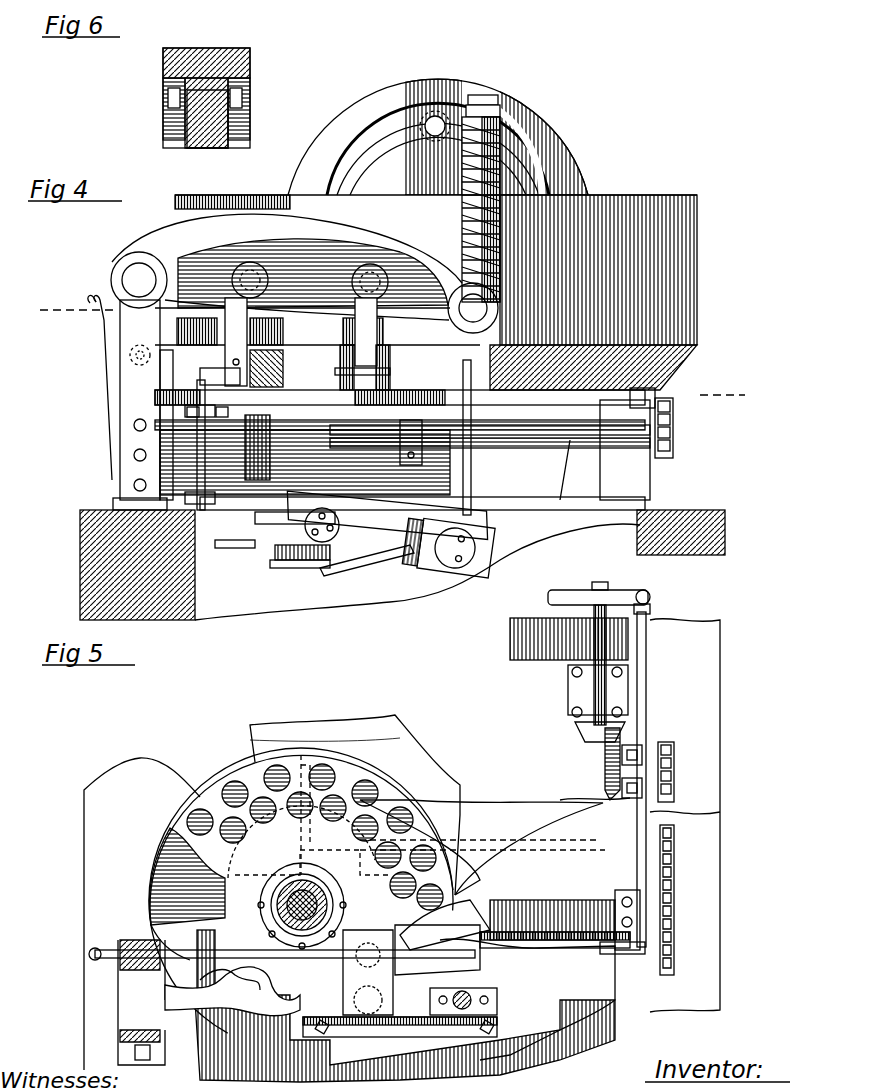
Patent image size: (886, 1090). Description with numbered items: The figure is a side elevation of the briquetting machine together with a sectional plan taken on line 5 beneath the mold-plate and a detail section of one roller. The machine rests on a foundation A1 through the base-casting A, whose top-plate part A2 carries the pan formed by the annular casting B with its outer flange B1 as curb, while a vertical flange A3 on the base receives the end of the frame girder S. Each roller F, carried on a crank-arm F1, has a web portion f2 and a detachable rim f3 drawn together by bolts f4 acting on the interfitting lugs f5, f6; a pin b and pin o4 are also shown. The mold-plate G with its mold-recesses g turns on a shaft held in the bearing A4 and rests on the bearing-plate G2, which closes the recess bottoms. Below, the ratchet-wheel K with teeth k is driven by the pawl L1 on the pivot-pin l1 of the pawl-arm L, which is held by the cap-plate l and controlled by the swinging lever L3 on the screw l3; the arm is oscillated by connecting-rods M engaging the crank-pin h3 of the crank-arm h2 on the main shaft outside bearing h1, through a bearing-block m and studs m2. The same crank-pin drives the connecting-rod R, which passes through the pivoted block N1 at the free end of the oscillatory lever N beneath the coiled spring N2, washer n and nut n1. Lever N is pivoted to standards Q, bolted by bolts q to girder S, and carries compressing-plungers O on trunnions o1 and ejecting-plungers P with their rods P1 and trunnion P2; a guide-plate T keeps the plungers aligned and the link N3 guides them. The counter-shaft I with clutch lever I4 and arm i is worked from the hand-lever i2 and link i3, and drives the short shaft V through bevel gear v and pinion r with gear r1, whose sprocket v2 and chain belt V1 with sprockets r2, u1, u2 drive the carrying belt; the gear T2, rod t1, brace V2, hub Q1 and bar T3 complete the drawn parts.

In FIG. 6, the roller F is at (217, 86).
In FIG. 4, the roller F is at (518, 118).
In FIG. 6, the web portion f2 is at (207, 119).
In FIG. 4, the web portion f2 is at (510, 192).
In FIG. 6, the detachable rim f3 is at (195, 55).
In FIG. 4, the detachable rim f3 is at (512, 185).
In FIG. 6, the bolts f4 is at (190, 112).
In FIG. 4, the bolts f4 is at (445, 118).
In FIG. 6, the outwardly projecting lugs f5 is at (206, 103).
In FIG. 4, the inwardly projecting lugs f6 is at (410, 105).
In FIG. 4, the pin b is at (435, 102).
In FIG. 4, the plate or washer n is at (495, 120).
In FIG. 4, the nut n1 is at (484, 95).
In FIG. 4, the oscillatory lever N is at (304, 273).
In FIG. 4, the pivoted block N1 is at (452, 325).
In FIG. 4, the coiled spring N2 is at (460, 210).
In FIG. 4, the radius bar or link N3 is at (165, 352).
In FIG. 4, the annular casting B is at (630, 196).
In FIG. 4, the outer flange B1 is at (680, 368).
In FIG. 4, the rigid arm i is at (660, 398).
In FIG. 4, the hand-lever i2 is at (105, 370).
In FIG. 4, the link i3 is at (345, 565).
In FIG. 4, the section line 5 is at (385, 354).
In FIG. 4, the transverse bolts q is at (133, 426).
In FIG. 5, the transverse bolts q is at (135, 1050).
In FIG. 4, the roller o4 is at (254, 272).
In FIG. 4, the pivot-pins or trunnions o1 is at (248, 315).
In FIG. 4, the compressing-plungers O is at (262, 378).
In FIG. 4, the ejecting-plungers P is at (417, 355).
In FIG. 4, the rods P1 is at (362, 281).
In FIG. 4, the post P2 is at (363, 340).
In FIG. 4, the guide-plate T is at (340, 372).
In FIG. 4, the mold-plate G is at (395, 380).
In FIG. 5, the mold-plate G is at (424, 820).
In FIG. 4, the bearing-plate G2 is at (462, 390).
In FIG. 5, the bearing-plate G2 is at (160, 864).
In FIG. 4, the crank-arms F1 is at (478, 385).
In FIG. 4, the pawl L1 is at (215, 480).
In FIG. 4, the ratchet-teeth k is at (257, 450).
In FIG. 4, the bearing A4 is at (402, 541).
In FIG. 5, the bearing A4 is at (226, 962).
In FIG. 4, the frame bar or girder S is at (488, 453).
In FIG. 4, the pivot-pin l1 is at (393, 449).
In FIG. 4, the top-plate part A2 is at (515, 410).
In FIG. 5, the top-plate part A2 is at (482, 847).
In FIG. 4, the vertical flange A3 is at (440, 460).
In FIG. 5, the vertical flange A3 is at (462, 925).
In FIG. 4, the base-casting or bed A is at (537, 471).
In FIG. 5, the base-casting or bed A is at (570, 895).
In FIG. 4, the brace V2 is at (564, 470).
In FIG. 4, the chain u1 is at (664, 428).
In FIG. 4, the pivot-pins or studs m2 is at (492, 522).
In FIG. 5, the pivot-pins or studs m2 is at (492, 1038).
In FIG. 4, the crank-pin h3 is at (478, 540).
In FIG. 4, the bearing h1 is at (355, 528).
In FIG. 4, the bearing-block m is at (395, 552).
In FIG. 4, the ratchet-wheel K is at (250, 530).
In FIG. 5, the ratchet-wheel K is at (290, 1020).
In FIG. 4, the horizontal swinging lever L3 is at (265, 540).
In FIG. 4, the cap-plate l is at (295, 570).
In FIG. 5, the cap-plate l is at (630, 960).
In FIG. 5, the counter-shaft I is at (604, 590).
In FIG. 5, the transverse lever I4 is at (650, 592).
In FIG. 5, the gear T2 is at (620, 640).
In FIG. 5, the rod t1 is at (648, 690).
In FIG. 5, the bevel gear r1 is at (588, 740).
In FIG. 5, the bevel pinion r is at (604, 772).
In FIG. 5, the short shaft V is at (650, 755).
In FIG. 5, the beveled gear v is at (360, 941).
In FIG. 5, the sprocket r2 is at (674, 760).
In FIG. 5, the chain belt V1 is at (675, 860).
In FIG. 5, the chain end u2 is at (674, 930).
In FIG. 5, the foundation A1 is at (142, 914).
In FIG. 5, the mold-recesses g is at (325, 775).
In FIG. 5, the hub Q1 is at (320, 892).
In FIG. 5, the standards Q is at (122, 970).
In FIG. 5, the pawl-arm L is at (232, 999).
In FIG. 5, the connecting-rods M is at (430, 1038).
In FIG. 5, the connecting-rod R is at (498, 997).
In FIG. 5, the bar T3 is at (585, 960).
In FIG. 5, the abutting screw l3 is at (372, 1040).
In FIG. 5, the crank-arm h2 is at (430, 970).
In FIG. 5, the sprocket-wheel v2 is at (555, 924).